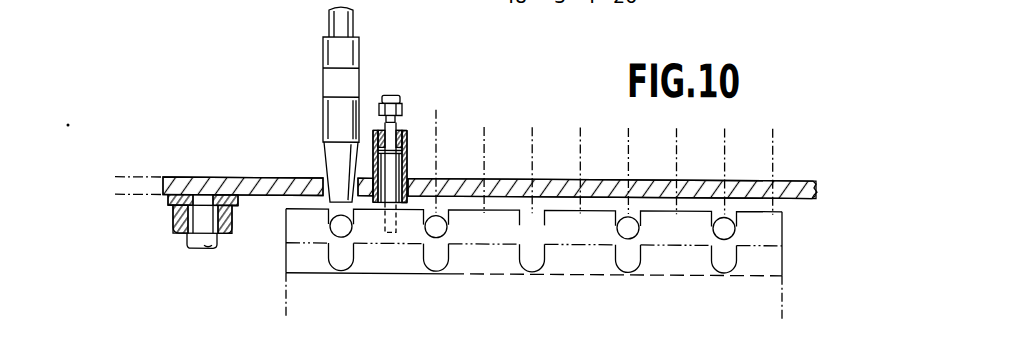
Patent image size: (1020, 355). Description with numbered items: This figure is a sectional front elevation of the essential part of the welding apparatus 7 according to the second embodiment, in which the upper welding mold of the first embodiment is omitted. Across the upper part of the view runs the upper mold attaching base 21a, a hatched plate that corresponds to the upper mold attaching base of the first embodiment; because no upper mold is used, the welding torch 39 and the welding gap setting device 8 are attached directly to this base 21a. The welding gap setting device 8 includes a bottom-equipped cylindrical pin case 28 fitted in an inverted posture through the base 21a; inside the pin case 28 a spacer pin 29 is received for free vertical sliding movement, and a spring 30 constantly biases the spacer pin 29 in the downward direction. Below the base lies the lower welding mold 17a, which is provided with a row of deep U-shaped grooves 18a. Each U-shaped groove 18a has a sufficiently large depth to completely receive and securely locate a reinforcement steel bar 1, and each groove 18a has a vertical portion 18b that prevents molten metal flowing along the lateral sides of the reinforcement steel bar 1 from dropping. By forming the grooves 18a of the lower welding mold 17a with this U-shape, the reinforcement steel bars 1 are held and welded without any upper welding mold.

The welding torch 39 is at (332, 81).
The pin case 28 is at (362, 143).
The welding gap setting device 8 is at (377, 141).
The spring 30 is at (406, 135).
The spacer pin 29 is at (392, 170).
The lower welding mold 17a is at (487, 214).
The upper mold attaching base 21a is at (550, 185).
The welding apparatus 7 is at (567, 207).
The reinforcement steel bar 1 is at (341, 230).
The U-shaped groove 18a is at (538, 225).
The vertical portion 18b is at (542, 257).